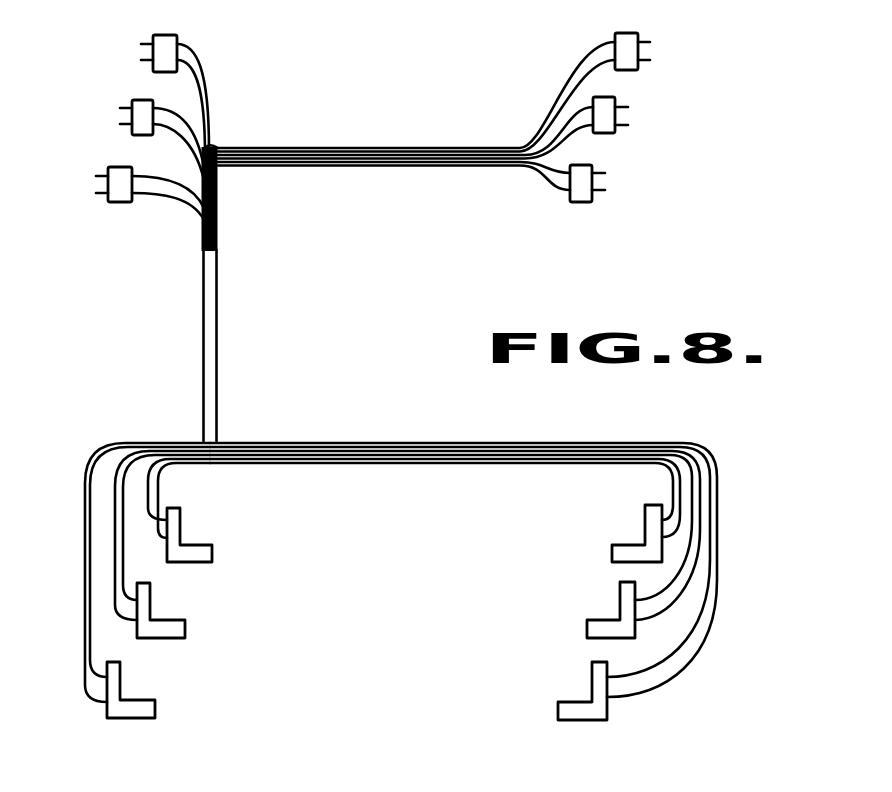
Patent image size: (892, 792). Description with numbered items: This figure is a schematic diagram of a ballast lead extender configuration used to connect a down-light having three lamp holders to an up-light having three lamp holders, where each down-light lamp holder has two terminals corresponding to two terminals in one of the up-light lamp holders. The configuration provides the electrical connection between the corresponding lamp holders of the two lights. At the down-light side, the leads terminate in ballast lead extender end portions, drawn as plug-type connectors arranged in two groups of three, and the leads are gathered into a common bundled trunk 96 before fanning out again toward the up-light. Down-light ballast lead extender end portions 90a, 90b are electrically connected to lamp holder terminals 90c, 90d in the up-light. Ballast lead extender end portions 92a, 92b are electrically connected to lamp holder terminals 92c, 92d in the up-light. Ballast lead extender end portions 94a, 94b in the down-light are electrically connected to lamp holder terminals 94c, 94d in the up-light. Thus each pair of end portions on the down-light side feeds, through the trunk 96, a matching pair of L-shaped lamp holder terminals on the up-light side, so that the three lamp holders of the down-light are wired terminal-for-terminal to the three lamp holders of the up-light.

The down-light ballast lead extender end portion 90a is at (154, 36).
The ballast lead extender end portion 92a is at (133, 101).
The ballast lead extender end portion 94a is at (110, 168).
The down-light ballast lead extender end portion 90b is at (632, 34).
The ballast lead extender end portion 92b is at (618, 100).
The ballast lead extender end portion 94b is at (594, 167).
The lamp holder terminal 90c is at (183, 533).
The lamp holder terminal 92c is at (150, 612).
The lamp holder terminal 94c is at (122, 688).
The lamp holder terminal 90d is at (645, 525).
The lamp holder terminal 92d is at (620, 597).
The lamp holder terminal 94d is at (592, 678).
The wiring harness trunk 96 is at (215, 315).